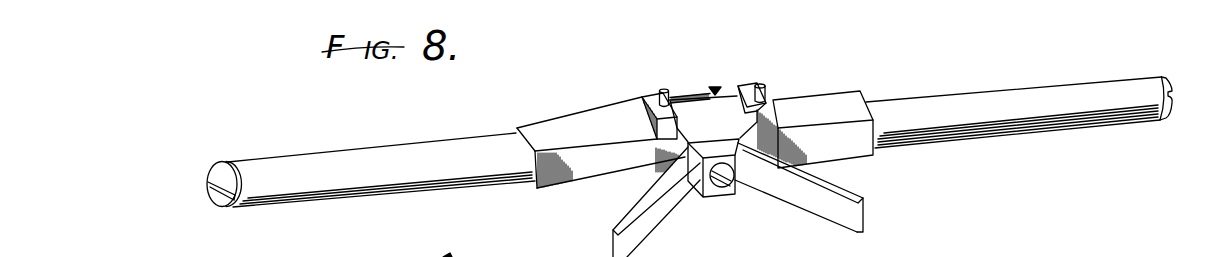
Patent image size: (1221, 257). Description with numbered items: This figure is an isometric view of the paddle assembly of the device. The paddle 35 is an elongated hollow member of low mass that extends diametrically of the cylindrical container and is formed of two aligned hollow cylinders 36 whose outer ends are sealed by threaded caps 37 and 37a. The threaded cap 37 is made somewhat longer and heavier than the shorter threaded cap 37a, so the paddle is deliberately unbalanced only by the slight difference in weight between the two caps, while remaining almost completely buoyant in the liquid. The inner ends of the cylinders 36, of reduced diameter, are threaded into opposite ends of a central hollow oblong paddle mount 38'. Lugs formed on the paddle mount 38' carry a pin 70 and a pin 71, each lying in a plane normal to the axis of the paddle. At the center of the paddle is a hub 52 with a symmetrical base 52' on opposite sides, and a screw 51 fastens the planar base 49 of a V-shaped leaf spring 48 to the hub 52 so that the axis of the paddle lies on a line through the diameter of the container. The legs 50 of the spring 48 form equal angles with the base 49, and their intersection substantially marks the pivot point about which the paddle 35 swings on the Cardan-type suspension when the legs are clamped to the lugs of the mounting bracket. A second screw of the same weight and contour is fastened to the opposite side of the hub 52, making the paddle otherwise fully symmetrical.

The paddle 35 is at (339, 147).
The hollow cylinders 36 is at (390, 157).
The threaded cap 37 is at (1175, 85).
The threaded cap 37a is at (208, 170).
The paddle mount 38' is at (601, 138).
The pin 70 is at (663, 88).
The pin 71 is at (768, 83).
The central hub 52 is at (690, 81).
The symmetrical base 52' is at (724, 138).
The planar base 49 is at (718, 143).
The screw 51 is at (700, 195).
The V-shaped spring 48 is at (645, 223).
The legs 50 is at (833, 220).